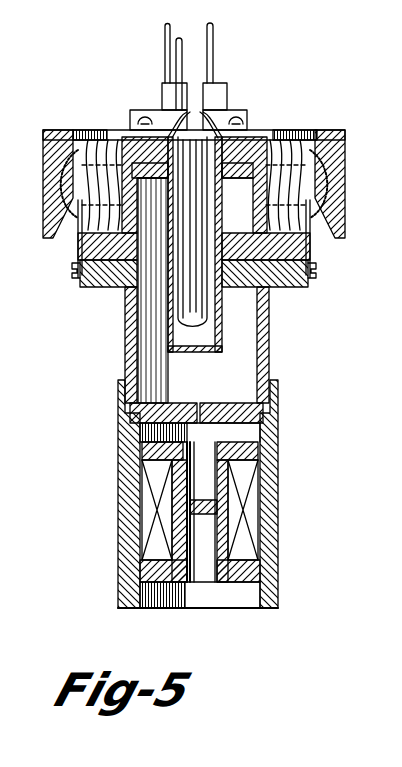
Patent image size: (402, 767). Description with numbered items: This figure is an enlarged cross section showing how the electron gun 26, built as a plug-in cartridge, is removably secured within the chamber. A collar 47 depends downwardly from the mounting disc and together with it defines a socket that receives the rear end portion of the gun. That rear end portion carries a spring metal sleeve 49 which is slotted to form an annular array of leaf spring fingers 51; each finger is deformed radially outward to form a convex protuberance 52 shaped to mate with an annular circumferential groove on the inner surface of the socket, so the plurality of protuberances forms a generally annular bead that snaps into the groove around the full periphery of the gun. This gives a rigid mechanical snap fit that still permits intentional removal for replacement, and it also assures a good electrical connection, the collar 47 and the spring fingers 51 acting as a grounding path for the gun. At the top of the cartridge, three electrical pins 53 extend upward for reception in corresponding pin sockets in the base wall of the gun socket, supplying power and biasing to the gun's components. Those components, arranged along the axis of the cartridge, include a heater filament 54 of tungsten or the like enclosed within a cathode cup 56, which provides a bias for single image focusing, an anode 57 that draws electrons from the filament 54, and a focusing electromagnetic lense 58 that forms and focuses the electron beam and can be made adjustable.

The electron gun 26 is at (282, 500).
The collar 47 is at (335, 128).
The spring metal sleeve 49 is at (315, 247).
The leaf spring fingers 51 is at (293, 125).
The convex protuberance 52 is at (333, 176).
The electrical pins 53 is at (212, 60).
The heater filament 54 is at (215, 313).
The cathode cup 56 is at (170, 332).
The anode 57 is at (240, 403).
The focusing electromagnetic lense 58 is at (180, 533).